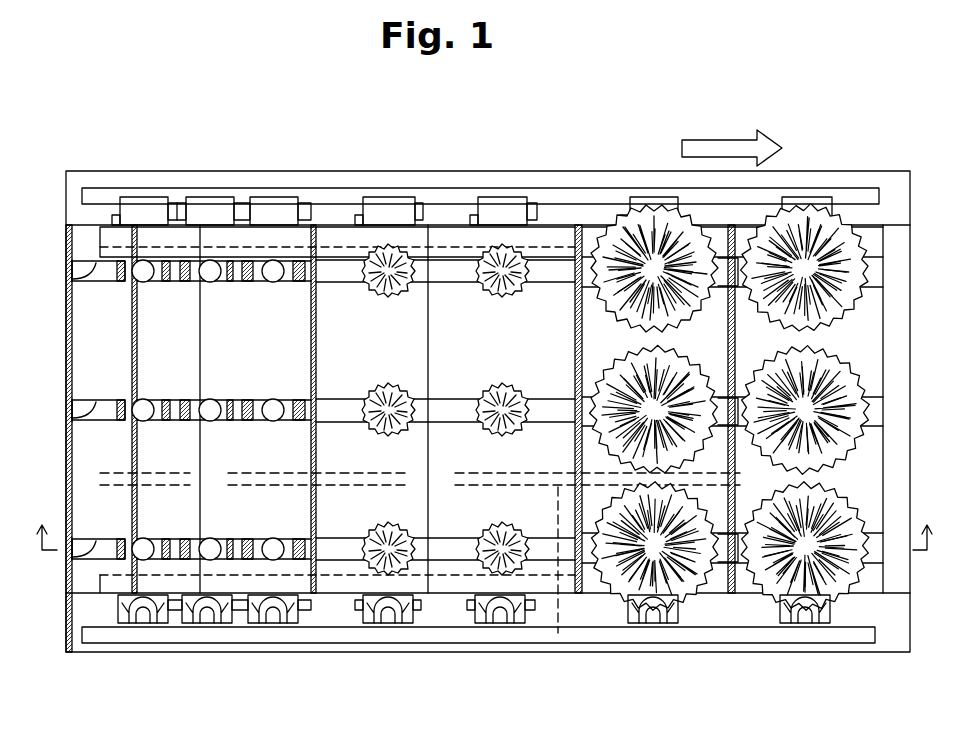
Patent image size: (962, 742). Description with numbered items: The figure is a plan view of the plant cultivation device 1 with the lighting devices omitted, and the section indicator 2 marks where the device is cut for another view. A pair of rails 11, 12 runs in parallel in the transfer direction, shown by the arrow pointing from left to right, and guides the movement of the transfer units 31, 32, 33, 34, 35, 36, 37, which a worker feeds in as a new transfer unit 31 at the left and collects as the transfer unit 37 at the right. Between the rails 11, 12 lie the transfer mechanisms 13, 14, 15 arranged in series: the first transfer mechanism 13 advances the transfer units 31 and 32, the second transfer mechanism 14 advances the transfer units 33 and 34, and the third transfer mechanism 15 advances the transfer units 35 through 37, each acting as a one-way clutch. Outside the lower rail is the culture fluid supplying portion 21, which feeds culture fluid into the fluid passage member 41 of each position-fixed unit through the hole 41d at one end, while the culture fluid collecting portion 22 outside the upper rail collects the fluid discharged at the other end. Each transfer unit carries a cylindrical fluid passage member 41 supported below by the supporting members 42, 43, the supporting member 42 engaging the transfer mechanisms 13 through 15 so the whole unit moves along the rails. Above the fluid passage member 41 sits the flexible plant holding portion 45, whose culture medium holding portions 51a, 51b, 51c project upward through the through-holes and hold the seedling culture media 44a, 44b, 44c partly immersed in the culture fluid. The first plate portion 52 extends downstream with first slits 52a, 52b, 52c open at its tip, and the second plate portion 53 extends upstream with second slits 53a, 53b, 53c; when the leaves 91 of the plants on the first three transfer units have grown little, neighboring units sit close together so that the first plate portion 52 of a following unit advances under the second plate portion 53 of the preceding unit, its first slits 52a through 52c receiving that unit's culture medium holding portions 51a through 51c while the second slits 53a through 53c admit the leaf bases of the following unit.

The plant cultivation device 1 is at (825, 117).
The section line 2 is at (484, 523).
The rail 11 is at (742, 600).
The rail 12 is at (455, 215).
The first transfer mechanism 13 is at (98, 473).
The second transfer mechanism 14 is at (327, 600).
The third transfer mechanism 15 is at (578, 598).
The culture fluid supplying portion 21 is at (847, 643).
The culture fluid collecting portion 22 is at (862, 188).
The transfer unit 31 is at (140, 198).
The transfer unit 32 is at (210, 198).
The transfer unit 33 is at (276, 198).
The transfer unit 34 is at (383, 198).
The transfer unit 35 is at (500, 198).
The transfer unit 36 is at (642, 198).
The transfer unit 37 is at (806, 198).
The fluid passage member 41 is at (247, 613).
The hole 41d is at (387, 617).
The supporting member 42 is at (423, 603).
The supporting member 43 is at (428, 215).
The seedling culture medium 44a is at (135, 558).
The seedling culture medium 44b is at (140, 420).
The seedling culture medium 44c is at (140, 280).
The plant holding portion 45 is at (80, 225).
The culture medium holding portion 51a is at (277, 560).
The culture medium holding portion 51b is at (292, 400).
The culture medium holding portion 51c is at (291, 275).
The first plate portion 52 is at (550, 560).
The first slit 52a is at (555, 635).
The first slit 52b is at (558, 400).
The first slit 52c is at (562, 266).
The second plate portion 53 is at (98, 372).
The second slit 53a is at (67, 553).
The second slit 53b is at (70, 412).
The second slit 53c is at (70, 273).
The leaves 91 is at (628, 215).